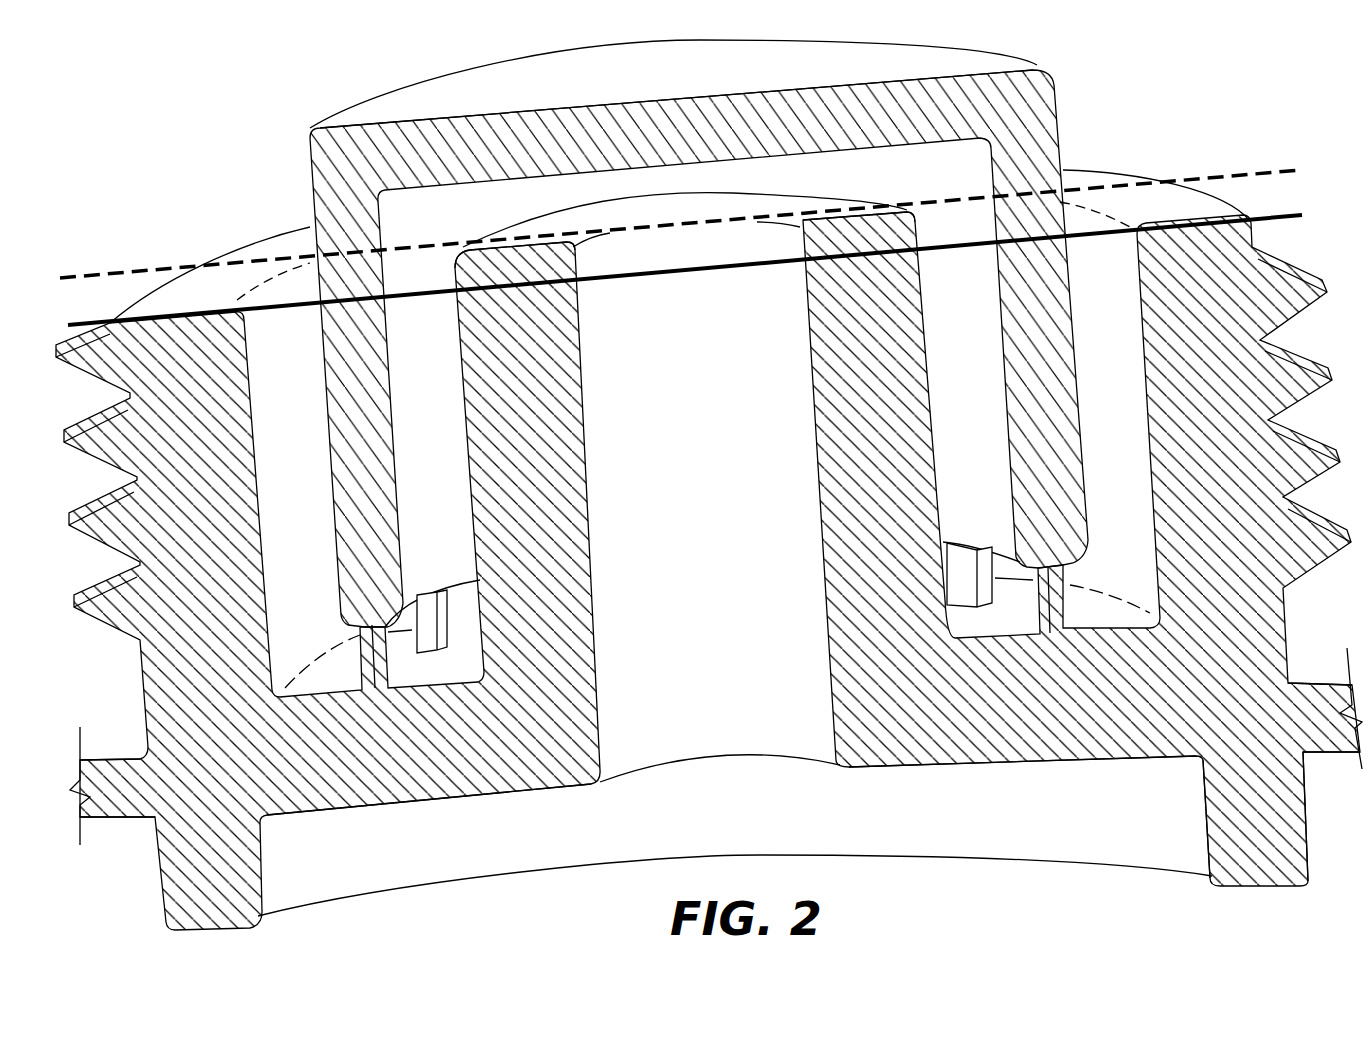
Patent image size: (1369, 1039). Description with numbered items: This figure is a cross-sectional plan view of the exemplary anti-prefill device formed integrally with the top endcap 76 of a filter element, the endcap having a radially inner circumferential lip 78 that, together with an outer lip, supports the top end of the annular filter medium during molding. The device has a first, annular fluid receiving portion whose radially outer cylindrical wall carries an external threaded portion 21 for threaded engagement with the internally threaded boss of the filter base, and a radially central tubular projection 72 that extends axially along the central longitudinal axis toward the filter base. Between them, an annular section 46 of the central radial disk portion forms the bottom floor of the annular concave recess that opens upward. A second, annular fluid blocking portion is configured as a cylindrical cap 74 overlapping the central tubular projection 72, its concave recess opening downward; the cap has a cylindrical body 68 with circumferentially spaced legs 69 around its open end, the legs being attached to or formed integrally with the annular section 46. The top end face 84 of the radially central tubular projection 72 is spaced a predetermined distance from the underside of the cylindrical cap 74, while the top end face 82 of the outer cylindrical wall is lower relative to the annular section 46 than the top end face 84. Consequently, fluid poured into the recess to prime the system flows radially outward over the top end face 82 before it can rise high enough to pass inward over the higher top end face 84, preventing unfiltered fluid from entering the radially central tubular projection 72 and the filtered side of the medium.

The external threaded portion 21 is at (1290, 290).
The annular section 46 is at (1150, 740).
The cylindrical body 68 is at (330, 205).
The circumferentially spaced legs 69 is at (375, 655).
The radially central tubular projection 72 is at (482, 272).
The cylindrical cap 74 is at (530, 115).
The top endcap 76 is at (1295, 688).
The radially inner circumferential lip 78 is at (1255, 820).
The top end face of radially outer cylindrical wall 82 is at (1290, 218).
The top end face of radially central tubular projection 84 is at (1195, 180).